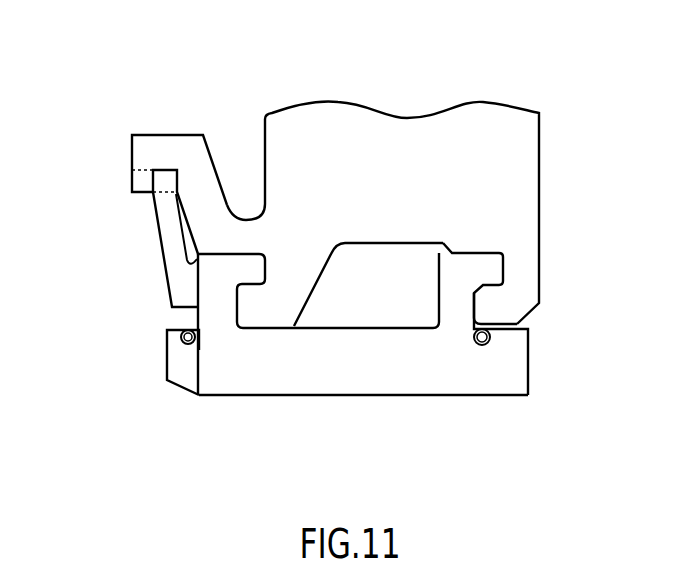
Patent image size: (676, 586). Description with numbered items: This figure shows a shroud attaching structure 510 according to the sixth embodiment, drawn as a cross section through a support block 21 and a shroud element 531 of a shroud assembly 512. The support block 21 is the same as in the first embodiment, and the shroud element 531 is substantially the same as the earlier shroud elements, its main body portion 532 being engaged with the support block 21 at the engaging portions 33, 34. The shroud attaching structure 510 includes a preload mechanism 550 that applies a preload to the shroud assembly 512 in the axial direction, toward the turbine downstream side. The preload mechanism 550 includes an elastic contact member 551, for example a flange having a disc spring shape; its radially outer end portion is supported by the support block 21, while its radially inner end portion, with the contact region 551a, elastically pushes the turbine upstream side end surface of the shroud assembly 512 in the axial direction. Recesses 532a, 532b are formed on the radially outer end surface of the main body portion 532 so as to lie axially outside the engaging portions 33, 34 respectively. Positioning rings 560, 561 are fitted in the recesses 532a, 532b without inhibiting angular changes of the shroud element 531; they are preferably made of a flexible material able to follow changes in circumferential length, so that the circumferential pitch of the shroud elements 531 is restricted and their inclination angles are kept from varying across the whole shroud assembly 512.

The support block 21 is at (374, 180).
The shroud attaching structure 510 is at (152, 124).
The engaging portion 33 is at (247, 272).
The engaging portion 34 is at (492, 268).
The preload mechanism 550 is at (111, 253).
The elastic contact member 551 is at (167, 268).
The arm protrusion 551a is at (207, 287).
The shroud assembly 512 is at (167, 347).
The shroud element 531 is at (530, 358).
The main body portion 532 is at (334, 318).
The recess 532a is at (183, 345).
The recess 532b is at (477, 345).
The positioning ring 560 is at (195, 345).
The positioning ring 561 is at (488, 345).